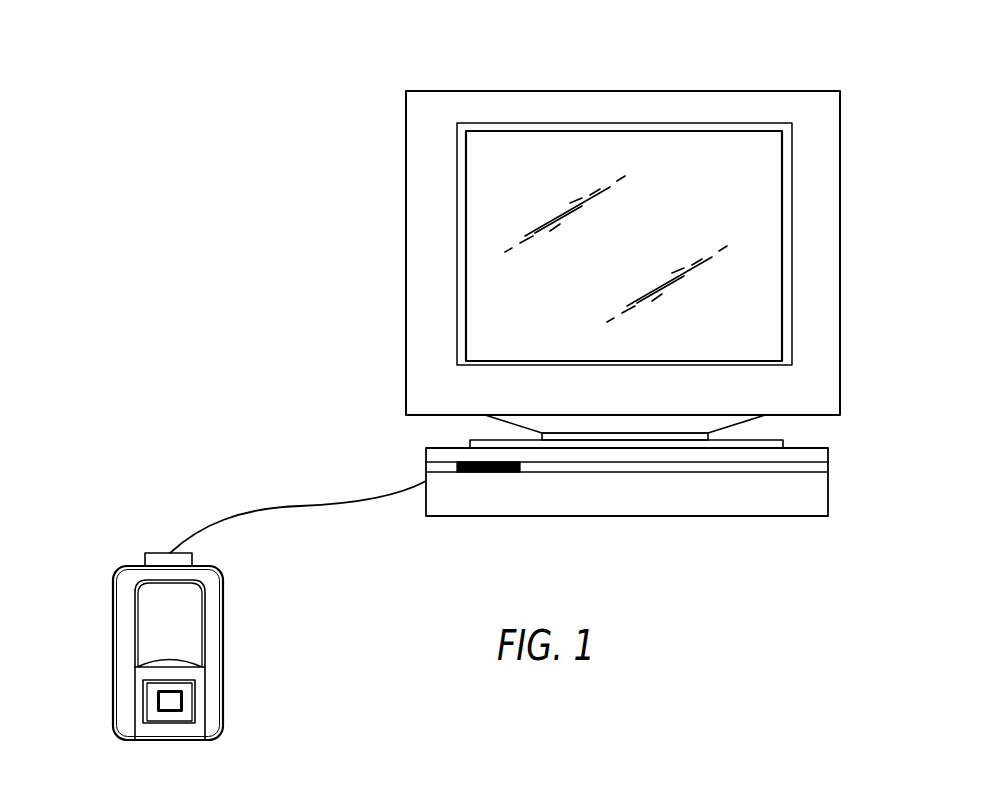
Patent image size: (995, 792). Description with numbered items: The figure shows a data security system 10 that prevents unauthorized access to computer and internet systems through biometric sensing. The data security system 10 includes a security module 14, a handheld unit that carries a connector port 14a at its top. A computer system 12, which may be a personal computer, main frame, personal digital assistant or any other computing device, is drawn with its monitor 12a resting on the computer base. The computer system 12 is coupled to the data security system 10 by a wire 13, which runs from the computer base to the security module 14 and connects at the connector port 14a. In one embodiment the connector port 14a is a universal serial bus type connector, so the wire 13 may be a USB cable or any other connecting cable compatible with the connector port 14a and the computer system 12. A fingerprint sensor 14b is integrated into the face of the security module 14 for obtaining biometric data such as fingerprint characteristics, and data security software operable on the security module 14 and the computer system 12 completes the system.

The data security system 10 is at (172, 600).
The computer system 12 is at (584, 263).
The monitor 12a is at (785, 90).
The wire 13 is at (279, 507).
The security module 14 is at (110, 618).
The connector port 14a is at (193, 558).
The fingerprint sensor 14b is at (172, 690).